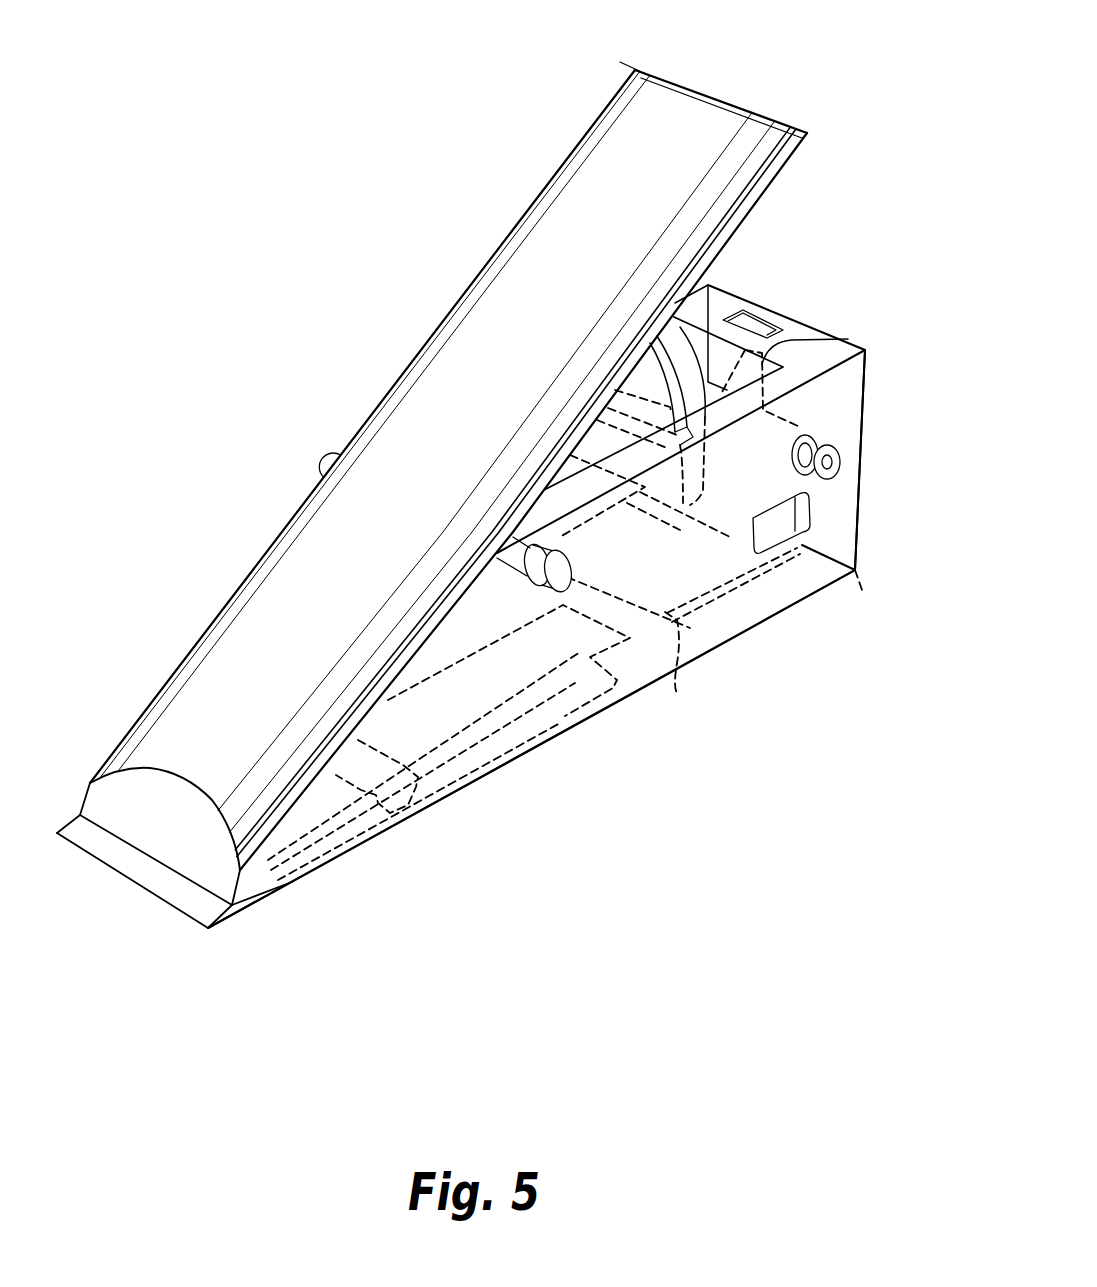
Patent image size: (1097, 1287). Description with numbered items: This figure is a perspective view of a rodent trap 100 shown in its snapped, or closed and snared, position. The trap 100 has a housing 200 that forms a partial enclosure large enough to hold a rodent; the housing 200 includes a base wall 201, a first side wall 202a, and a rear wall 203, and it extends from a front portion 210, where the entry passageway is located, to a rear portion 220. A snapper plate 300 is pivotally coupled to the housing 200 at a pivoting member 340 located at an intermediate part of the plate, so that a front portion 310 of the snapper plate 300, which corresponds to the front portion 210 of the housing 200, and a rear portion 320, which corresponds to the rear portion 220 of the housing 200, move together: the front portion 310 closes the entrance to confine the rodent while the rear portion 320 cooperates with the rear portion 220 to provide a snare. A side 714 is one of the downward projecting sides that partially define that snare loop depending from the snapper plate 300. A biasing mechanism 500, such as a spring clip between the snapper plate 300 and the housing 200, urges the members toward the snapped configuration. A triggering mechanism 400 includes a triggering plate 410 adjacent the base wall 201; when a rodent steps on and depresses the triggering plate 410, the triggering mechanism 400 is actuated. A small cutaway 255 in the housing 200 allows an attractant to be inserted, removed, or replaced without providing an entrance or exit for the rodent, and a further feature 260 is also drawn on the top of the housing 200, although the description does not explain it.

The trap 100 is at (298, 318).
The housing 200 is at (857, 468).
The base wall 201 is at (722, 635).
The first side wall 202a is at (781, 609).
The rear wall 203 is at (860, 392).
The front portion of the housing 210 is at (268, 900).
The rear portion of the housing 220 is at (795, 598).
The cutaway 255 is at (806, 500).
The slot 260 is at (767, 327).
The snapper plate 300 is at (807, 133).
The front portion of the snapper plate 310 is at (120, 765).
The rear portion of the snapper plate 320 is at (635, 70).
The pivoting member 340 is at (558, 580).
The triggering mechanism 400 is at (859, 595).
The triggering plate 410 is at (679, 665).
The biasing mechanism 500 is at (833, 340).
The side of snare loop 714 is at (686, 325).